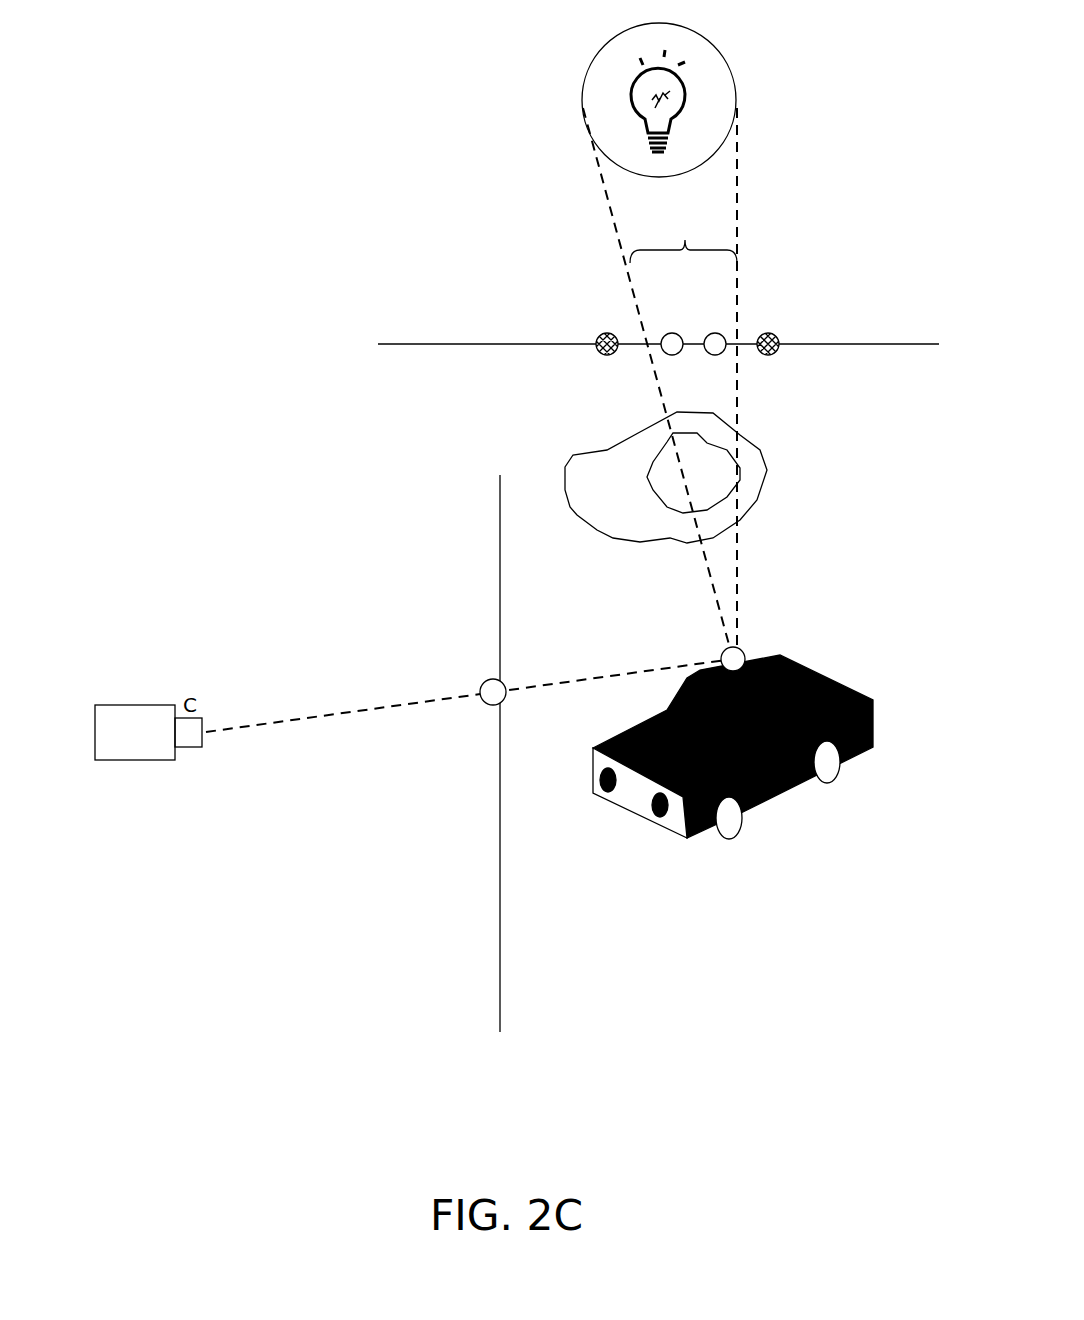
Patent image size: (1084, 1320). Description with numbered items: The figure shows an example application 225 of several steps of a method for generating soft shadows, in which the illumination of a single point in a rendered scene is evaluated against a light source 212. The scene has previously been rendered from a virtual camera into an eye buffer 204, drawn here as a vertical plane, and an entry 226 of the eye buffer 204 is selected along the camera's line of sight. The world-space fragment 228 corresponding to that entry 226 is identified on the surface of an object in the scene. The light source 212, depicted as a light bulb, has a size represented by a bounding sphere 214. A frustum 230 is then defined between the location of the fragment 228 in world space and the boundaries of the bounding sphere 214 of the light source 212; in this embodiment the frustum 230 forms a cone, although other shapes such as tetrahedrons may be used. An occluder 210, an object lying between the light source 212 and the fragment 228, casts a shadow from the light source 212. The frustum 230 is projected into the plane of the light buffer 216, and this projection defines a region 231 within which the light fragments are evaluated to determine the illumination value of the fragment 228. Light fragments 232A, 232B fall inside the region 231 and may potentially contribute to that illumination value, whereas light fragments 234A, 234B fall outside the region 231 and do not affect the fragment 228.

The eye buffer 204 is at (570, 781).
The occluder 210 is at (630, 540).
The light source 212 is at (682, 75).
The bounding sphere 214 is at (592, 65).
The light buffer 216 is at (549, 345).
The example application 225 is at (141, 145).
The entry of the eye buffer 226 is at (490, 697).
The fragment 228 is at (730, 655).
The frustum 230 is at (578, 380).
The region 231 is at (683, 237).
The light fragment 232A is at (670, 348).
The light fragment 232B is at (713, 348).
The light fragment 234A is at (603, 335).
The light fragment 234B is at (775, 336).